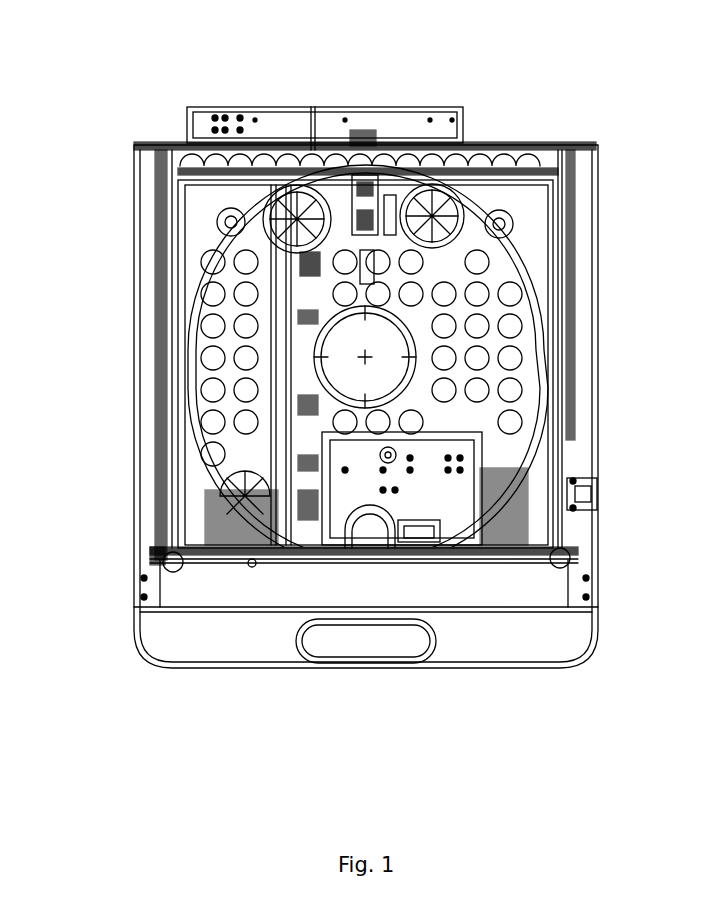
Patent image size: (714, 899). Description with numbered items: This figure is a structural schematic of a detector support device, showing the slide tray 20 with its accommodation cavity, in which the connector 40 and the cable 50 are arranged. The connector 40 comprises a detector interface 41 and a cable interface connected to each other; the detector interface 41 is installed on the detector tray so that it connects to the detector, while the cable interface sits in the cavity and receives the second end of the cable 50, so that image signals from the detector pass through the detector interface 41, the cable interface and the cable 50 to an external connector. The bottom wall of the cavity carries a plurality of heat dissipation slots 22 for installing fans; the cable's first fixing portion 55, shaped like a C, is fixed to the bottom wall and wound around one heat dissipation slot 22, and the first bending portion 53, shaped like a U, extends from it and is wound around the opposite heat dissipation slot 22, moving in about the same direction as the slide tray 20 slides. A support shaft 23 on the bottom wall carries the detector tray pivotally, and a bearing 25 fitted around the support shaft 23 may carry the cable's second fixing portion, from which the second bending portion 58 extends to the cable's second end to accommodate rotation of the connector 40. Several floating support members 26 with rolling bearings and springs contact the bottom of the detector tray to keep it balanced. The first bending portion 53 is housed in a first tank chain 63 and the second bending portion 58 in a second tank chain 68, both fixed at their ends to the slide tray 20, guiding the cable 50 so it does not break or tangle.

The slide tray 20 is at (195, 232).
The heat dissipation slots 22 is at (312, 150).
The support shaft 23 is at (370, 355).
The bearing 25 is at (318, 352).
The floating support members 26 is at (222, 210).
The connector 40 is at (385, 552).
The detector interface 41 is at (437, 558).
The cable 50 is at (300, 262).
The first bending portion 53 is at (282, 528).
The first fixing portion 55 is at (355, 138).
The second bending portion 58 is at (490, 268).
The first tank chain 63 is at (290, 412).
The second tank chain 68 is at (470, 392).